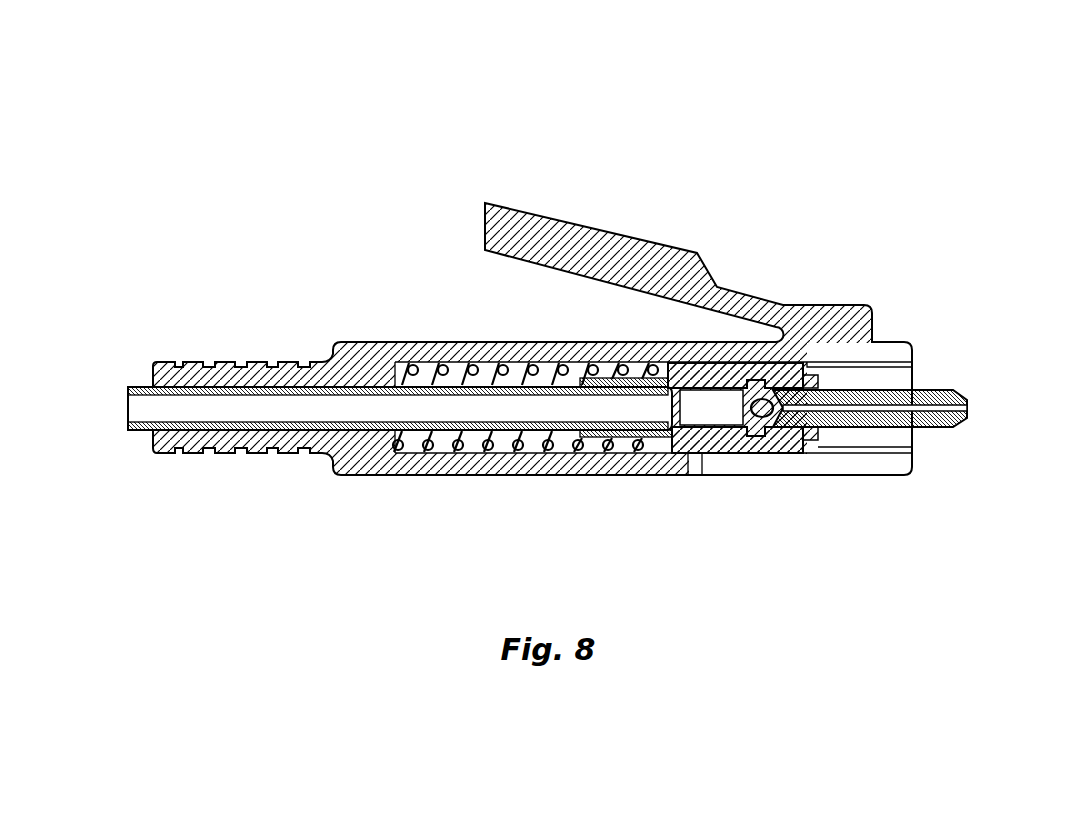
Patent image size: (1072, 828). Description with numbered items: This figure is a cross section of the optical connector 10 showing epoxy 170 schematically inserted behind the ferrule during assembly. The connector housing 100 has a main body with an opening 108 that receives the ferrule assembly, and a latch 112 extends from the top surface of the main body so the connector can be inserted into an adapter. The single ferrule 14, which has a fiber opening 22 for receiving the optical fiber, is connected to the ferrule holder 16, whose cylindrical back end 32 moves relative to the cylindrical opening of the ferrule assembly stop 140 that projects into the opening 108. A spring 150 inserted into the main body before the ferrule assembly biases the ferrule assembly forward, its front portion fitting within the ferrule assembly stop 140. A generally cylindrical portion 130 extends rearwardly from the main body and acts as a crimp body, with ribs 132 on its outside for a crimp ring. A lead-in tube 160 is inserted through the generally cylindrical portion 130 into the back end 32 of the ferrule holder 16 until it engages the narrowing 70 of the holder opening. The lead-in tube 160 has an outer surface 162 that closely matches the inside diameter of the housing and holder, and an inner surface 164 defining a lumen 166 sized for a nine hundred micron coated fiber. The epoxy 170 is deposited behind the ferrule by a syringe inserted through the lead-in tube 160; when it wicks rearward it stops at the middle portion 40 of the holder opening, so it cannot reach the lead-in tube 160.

The optical connector 10 is at (368, 160).
The single ferrule 14 is at (958, 388).
The ferrule holder 16 is at (788, 455).
The fiber opening 22 is at (968, 404).
The back end of the ferrule holder 32 is at (597, 437).
The middle portion of the opening 40 is at (707, 410).
The narrowing 70 is at (678, 455).
The connector housing 100 is at (356, 302).
The opening 108 is at (490, 365).
The latch 112 is at (590, 227).
The generally cylindrical portion 130 is at (228, 478).
The ribs 132 is at (284, 455).
The ferrule assembly stop 140 is at (652, 440).
The spring 150 is at (393, 450).
The lead-in tube 160 is at (138, 431).
The outer surface 162 is at (136, 386).
The inner surface 164 is at (135, 416).
The lumen 166 is at (262, 415).
The epoxy 170 is at (762, 418).